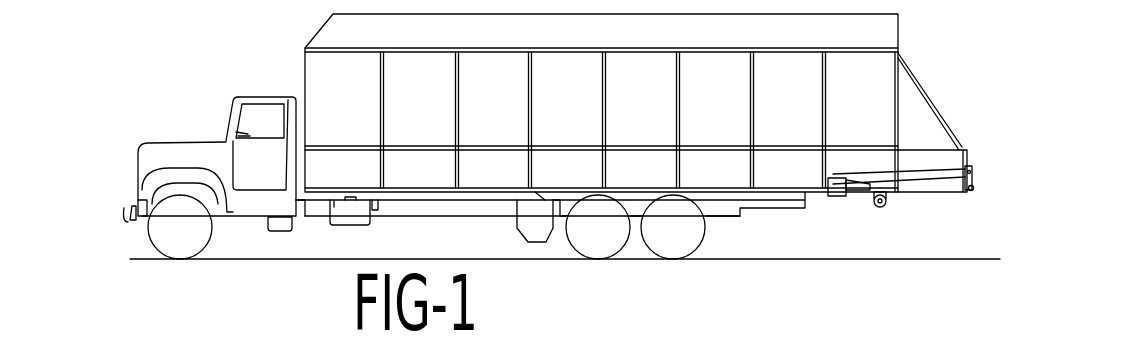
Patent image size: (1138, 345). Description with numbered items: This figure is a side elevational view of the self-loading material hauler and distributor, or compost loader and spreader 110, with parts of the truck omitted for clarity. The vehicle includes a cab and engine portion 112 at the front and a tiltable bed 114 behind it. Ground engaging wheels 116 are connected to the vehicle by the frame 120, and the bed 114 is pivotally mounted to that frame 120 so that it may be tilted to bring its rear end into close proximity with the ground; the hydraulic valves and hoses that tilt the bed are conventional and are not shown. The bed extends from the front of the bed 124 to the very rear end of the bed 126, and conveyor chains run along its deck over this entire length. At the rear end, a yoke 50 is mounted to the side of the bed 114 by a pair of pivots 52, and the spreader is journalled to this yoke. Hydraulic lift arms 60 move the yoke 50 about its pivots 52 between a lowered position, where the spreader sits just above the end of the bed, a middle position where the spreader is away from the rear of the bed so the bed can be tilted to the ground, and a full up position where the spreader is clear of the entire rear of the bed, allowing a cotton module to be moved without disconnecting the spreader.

The compost loader and spreader 110 is at (236, 40).
The cab and engine portion 112 is at (172, 132).
The tiltable bed 114 is at (750, 198).
The ground engaging wheels 116 is at (679, 243).
The frame 120 is at (434, 214).
The front of the bed 124 is at (302, 92).
The rear end of the bed 126 is at (966, 152).
The yoke 50 is at (927, 176).
The pivots 52 is at (837, 178).
The hydraulic lift arms 60 is at (866, 196).